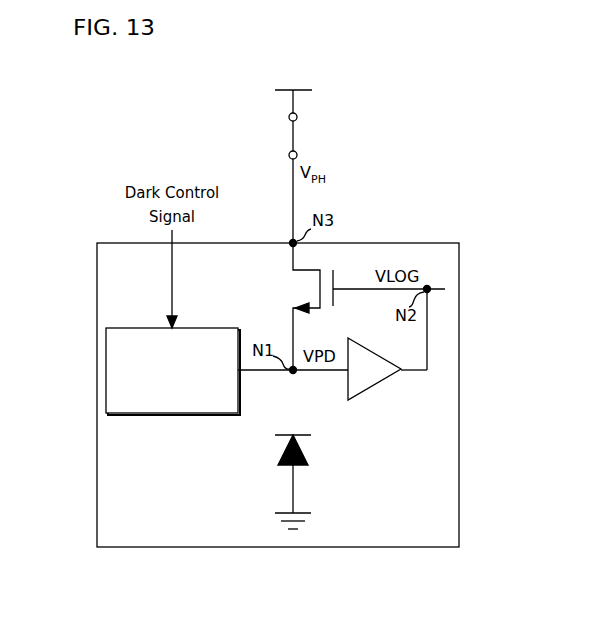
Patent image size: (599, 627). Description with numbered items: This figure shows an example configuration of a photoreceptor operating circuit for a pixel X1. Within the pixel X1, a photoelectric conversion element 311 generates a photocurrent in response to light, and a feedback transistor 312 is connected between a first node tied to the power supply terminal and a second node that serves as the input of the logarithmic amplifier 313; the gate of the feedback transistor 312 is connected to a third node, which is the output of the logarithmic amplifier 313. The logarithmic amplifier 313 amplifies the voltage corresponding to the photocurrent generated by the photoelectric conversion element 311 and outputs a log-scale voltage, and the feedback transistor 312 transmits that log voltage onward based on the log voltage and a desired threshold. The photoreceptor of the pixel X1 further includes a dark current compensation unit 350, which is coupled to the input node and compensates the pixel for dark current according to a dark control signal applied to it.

The photodiode 311 is at (306, 447).
The feedback transistor 312 is at (301, 290).
The logarithmic amplifier 313 is at (374, 387).
The dark current compensation unit 350 is at (145, 327).
The pixel X1 is at (280, 548).